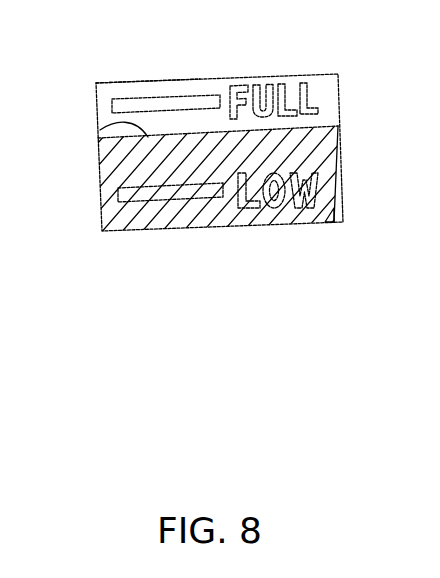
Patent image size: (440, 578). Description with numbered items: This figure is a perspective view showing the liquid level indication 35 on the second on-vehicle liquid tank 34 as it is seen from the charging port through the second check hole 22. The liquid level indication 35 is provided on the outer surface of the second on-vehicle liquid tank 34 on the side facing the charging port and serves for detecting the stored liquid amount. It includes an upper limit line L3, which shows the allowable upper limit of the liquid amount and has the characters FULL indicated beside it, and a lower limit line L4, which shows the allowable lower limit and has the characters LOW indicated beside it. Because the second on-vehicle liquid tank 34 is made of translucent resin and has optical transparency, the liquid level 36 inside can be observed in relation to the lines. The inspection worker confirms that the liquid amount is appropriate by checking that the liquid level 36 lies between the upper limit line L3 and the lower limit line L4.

The second check hole 22 is at (130, 164).
The second on-vehicle liquid tank 34 is at (112, 93).
The liquid level indication 35 is at (320, 92).
The liquid level 36 is at (100, 130).
The upper limit line L3 is at (172, 98).
The lower limit line L4 is at (191, 200).